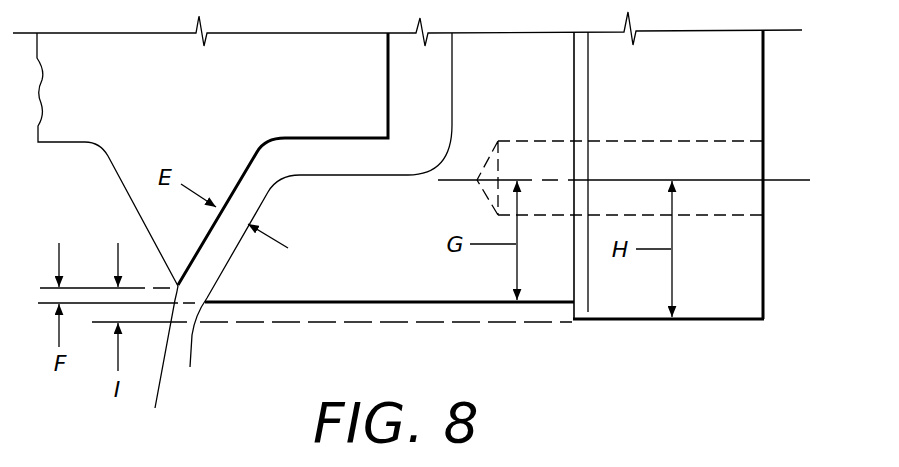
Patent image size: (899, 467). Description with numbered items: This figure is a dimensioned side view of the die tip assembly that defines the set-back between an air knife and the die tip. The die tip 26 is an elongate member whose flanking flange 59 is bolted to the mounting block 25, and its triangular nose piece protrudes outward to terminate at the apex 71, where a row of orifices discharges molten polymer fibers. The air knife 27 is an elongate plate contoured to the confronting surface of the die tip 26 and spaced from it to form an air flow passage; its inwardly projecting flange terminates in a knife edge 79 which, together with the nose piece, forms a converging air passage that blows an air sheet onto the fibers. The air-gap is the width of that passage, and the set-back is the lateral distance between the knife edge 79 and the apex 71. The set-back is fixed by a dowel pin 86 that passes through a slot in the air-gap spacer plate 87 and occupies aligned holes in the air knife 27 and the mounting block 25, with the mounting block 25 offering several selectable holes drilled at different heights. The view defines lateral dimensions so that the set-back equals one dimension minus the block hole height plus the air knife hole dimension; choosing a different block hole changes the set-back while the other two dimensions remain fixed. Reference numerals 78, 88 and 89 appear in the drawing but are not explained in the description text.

The mounting block 25 is at (747, 324).
The die tip 26 is at (124, 200).
The air knife 27 is at (363, 307).
The flange 59 is at (213, 228).
The apex 71 is at (157, 361).
The inclined channel 78 is at (210, 270).
The knife edge 79 is at (313, 216).
The dowel pin 86 is at (700, 141).
The air-gap spacer plate 87 is at (583, 312).
The bottom wall 88 is at (639, 298).
The step surface 89 is at (540, 278).